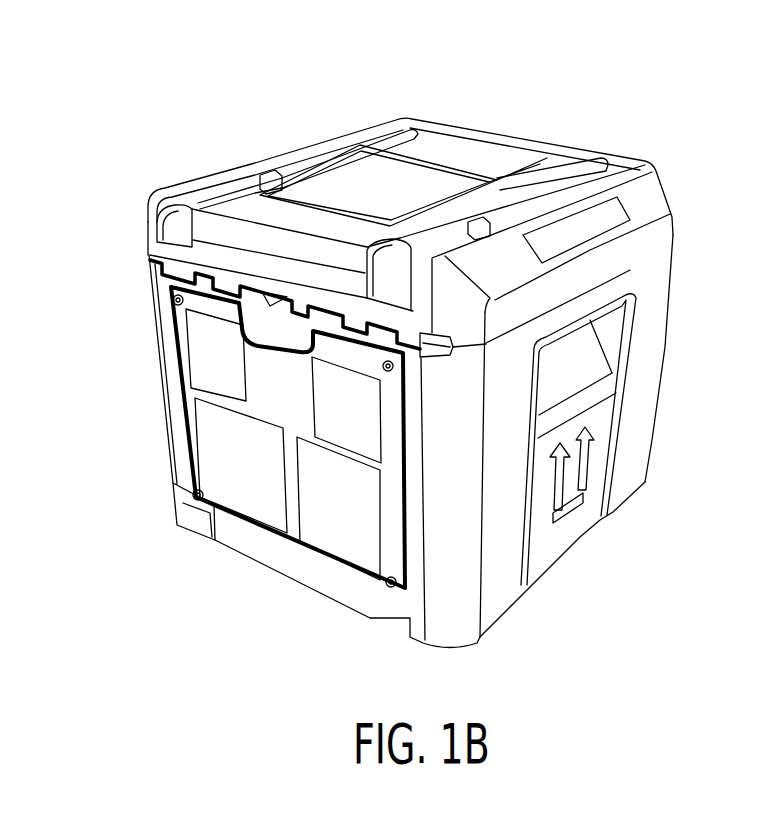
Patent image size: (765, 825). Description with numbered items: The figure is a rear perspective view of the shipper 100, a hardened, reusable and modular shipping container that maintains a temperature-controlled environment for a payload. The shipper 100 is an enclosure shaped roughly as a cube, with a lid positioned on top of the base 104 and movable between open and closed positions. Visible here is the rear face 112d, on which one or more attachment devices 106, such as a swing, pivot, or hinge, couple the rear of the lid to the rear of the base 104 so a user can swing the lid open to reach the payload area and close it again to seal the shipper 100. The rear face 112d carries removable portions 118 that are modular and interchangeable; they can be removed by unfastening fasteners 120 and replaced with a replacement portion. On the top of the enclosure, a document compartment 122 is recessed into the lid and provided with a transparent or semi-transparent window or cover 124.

The shipper 100 is at (131, 92).
The base 104 is at (170, 435).
The attachment device 106 is at (150, 253).
The rear face 112d is at (196, 494).
The portion 118 is at (320, 540).
The fastener 120 is at (390, 587).
The document compartment 122 is at (357, 167).
The window or cover 124 is at (493, 172).